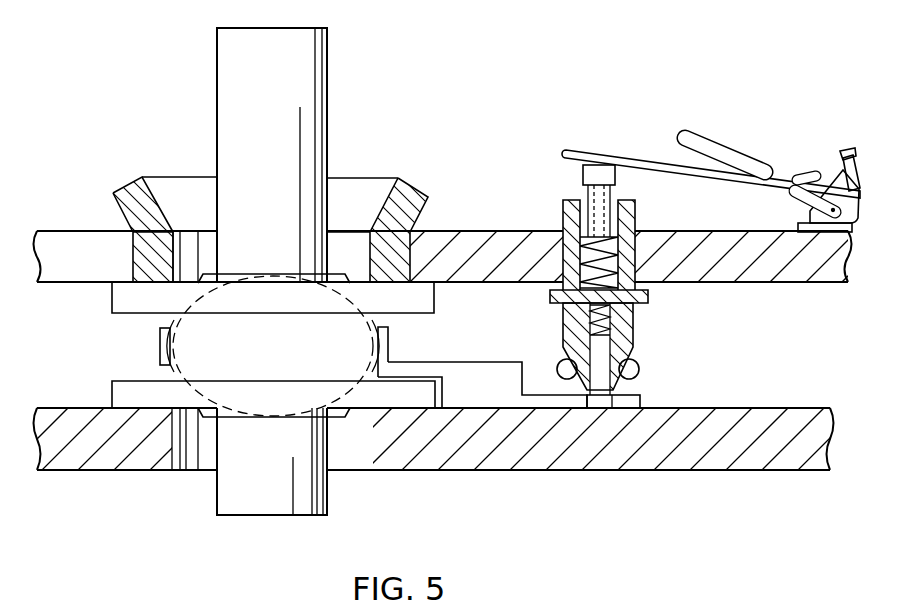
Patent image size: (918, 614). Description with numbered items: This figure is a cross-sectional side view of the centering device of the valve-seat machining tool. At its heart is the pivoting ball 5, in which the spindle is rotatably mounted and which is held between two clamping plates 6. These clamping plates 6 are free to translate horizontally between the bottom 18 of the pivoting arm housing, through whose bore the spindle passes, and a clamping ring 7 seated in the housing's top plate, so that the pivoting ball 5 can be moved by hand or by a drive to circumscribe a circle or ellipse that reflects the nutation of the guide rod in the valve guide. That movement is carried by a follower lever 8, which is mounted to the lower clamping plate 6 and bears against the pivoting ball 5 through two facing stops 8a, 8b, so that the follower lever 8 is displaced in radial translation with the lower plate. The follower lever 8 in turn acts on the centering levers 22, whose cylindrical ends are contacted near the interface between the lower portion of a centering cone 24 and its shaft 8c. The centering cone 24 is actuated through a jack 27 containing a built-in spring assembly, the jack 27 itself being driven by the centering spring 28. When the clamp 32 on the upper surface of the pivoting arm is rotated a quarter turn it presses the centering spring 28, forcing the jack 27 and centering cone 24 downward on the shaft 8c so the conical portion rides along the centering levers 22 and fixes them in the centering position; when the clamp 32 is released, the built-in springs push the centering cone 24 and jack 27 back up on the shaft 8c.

The pivoting ball 5 is at (200, 370).
The clamping plates 6 is at (125, 296).
The clamping ring 7 is at (133, 192).
The follower lever 8 is at (473, 380).
The stop 8a is at (383, 352).
The stop 8b is at (158, 343).
The shaft 8c is at (615, 386).
The bottom 18 is at (137, 455).
The centering levers 22 is at (640, 368).
The centering cones 24 is at (640, 332).
The jacks 27 is at (568, 238).
The centering spring 28 is at (655, 150).
The clamp 32 is at (710, 137).